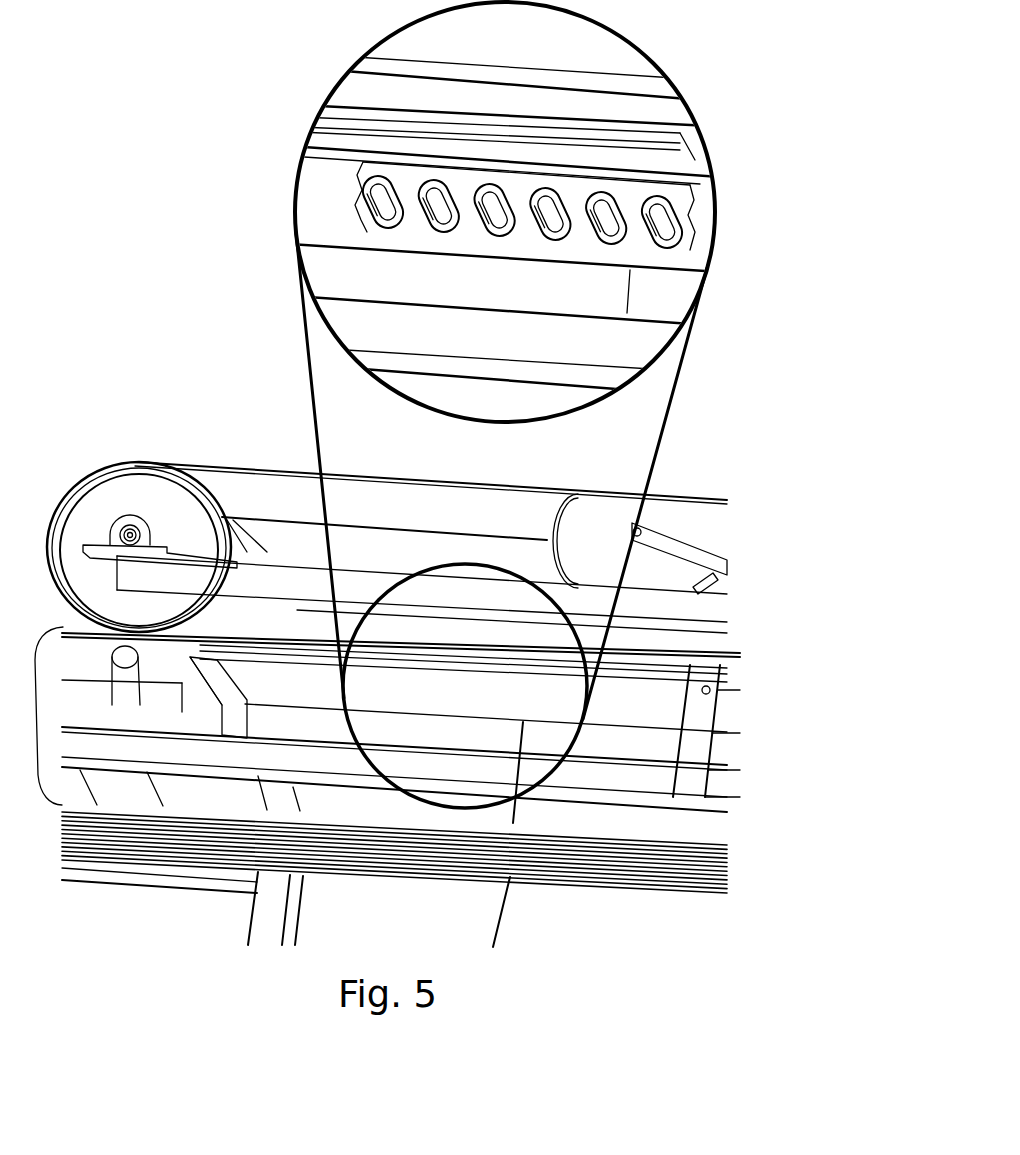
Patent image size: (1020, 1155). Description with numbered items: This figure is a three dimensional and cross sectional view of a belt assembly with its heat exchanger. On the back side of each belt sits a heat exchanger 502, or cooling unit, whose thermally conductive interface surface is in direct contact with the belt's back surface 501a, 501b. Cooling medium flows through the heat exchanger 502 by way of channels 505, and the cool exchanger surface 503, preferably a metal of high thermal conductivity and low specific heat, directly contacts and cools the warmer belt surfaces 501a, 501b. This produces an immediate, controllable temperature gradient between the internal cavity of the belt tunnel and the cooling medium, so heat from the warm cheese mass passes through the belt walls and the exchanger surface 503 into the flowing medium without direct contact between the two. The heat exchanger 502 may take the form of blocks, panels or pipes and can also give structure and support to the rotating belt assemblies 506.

The belt back surface 501a is at (317, 115).
The belt back surface 501b is at (312, 149).
The heat exchanger 502 is at (653, 120).
The exchanger surface 503 is at (690, 178).
The channels 505 is at (682, 253).
The rotating belt assemblies 506 is at (75, 690).